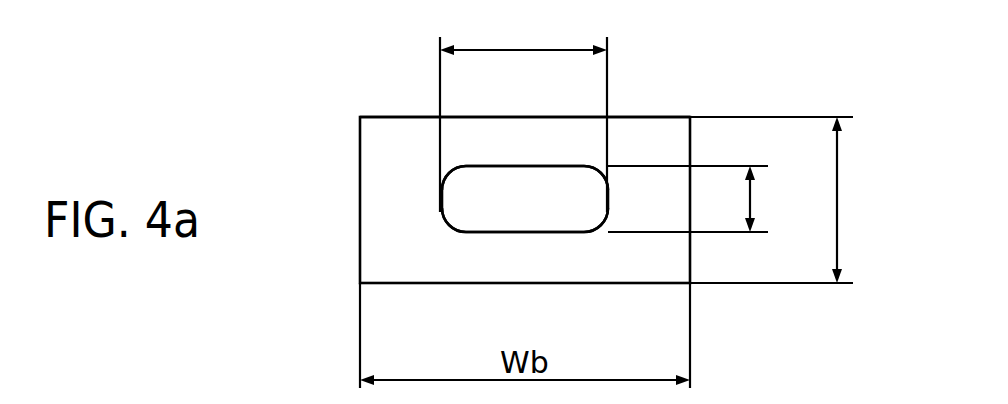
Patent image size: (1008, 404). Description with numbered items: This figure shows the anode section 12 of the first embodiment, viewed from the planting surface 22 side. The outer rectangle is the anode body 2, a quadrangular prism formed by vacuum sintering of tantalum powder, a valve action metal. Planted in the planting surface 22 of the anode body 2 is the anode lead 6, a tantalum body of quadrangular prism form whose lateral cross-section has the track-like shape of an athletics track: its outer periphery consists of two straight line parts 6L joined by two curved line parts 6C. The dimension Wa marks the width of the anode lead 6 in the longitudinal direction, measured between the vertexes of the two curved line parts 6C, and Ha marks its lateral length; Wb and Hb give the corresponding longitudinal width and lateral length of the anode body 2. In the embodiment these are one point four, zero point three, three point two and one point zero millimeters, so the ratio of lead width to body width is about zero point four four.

The planting surface 22 is at (388, 137).
The anode body 2 is at (653, 116).
The anode section 12 is at (769, 74).
The anode lead 6 is at (556, 222).
The straight line parts 6L is at (540, 165).
The curved line parts 6C is at (441, 207).